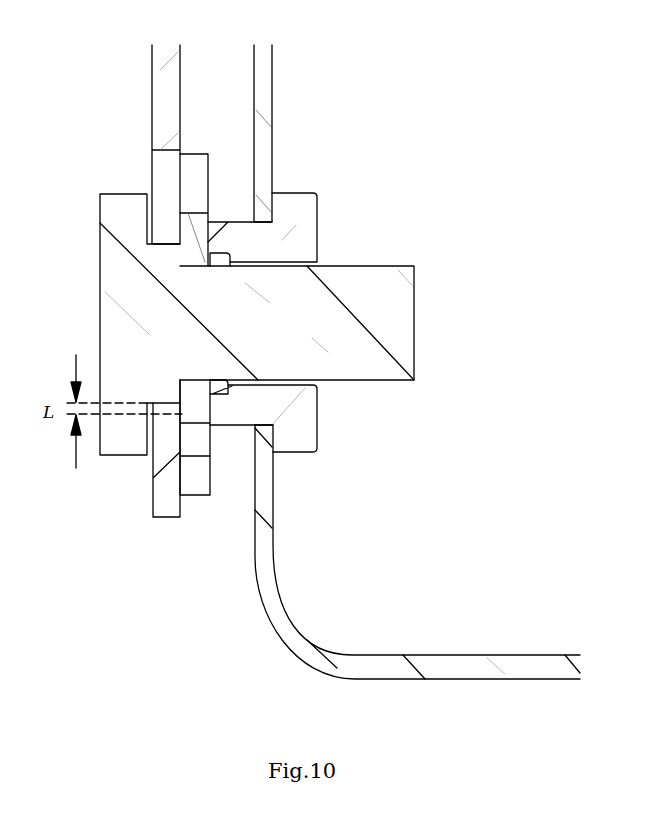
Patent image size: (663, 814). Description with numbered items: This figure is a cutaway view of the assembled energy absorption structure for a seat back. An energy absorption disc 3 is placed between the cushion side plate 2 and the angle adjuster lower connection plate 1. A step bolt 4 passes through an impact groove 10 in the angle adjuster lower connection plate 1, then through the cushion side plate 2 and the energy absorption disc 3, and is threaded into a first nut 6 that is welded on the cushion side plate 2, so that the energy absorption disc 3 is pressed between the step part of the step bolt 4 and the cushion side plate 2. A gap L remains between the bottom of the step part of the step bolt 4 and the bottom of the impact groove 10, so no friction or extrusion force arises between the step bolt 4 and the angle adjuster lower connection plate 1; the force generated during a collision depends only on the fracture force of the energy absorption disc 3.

The angle adjuster lower connection plate 1 is at (148, 112).
The impact groove 10 is at (148, 172).
The step bolt 4 is at (109, 277).
The first nut 6 is at (306, 218).
The energy absorption disc 3 is at (201, 500).
The cushion side plate 2 is at (280, 578).